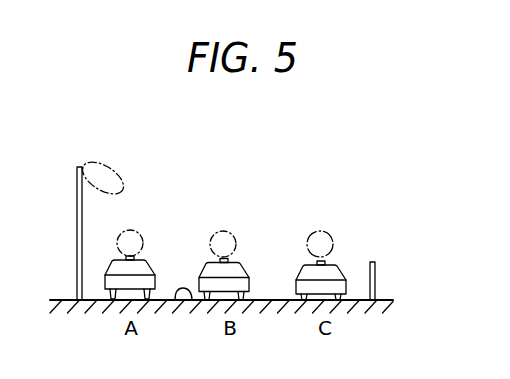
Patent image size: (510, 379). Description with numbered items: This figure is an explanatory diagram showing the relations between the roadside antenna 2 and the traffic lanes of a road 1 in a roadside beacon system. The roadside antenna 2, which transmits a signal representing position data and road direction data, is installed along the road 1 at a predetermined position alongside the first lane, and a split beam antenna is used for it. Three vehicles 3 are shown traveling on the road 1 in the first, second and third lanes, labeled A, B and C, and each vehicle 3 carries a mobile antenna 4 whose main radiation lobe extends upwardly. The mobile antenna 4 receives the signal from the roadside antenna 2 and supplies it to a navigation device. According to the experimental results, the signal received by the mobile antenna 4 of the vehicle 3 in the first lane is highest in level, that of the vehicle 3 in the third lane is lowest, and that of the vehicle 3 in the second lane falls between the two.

The road 1 is at (180, 295).
The roadside antenna 2 is at (87, 167).
The vehicle 3 is at (142, 272).
The mobile antenna 4 is at (131, 257).